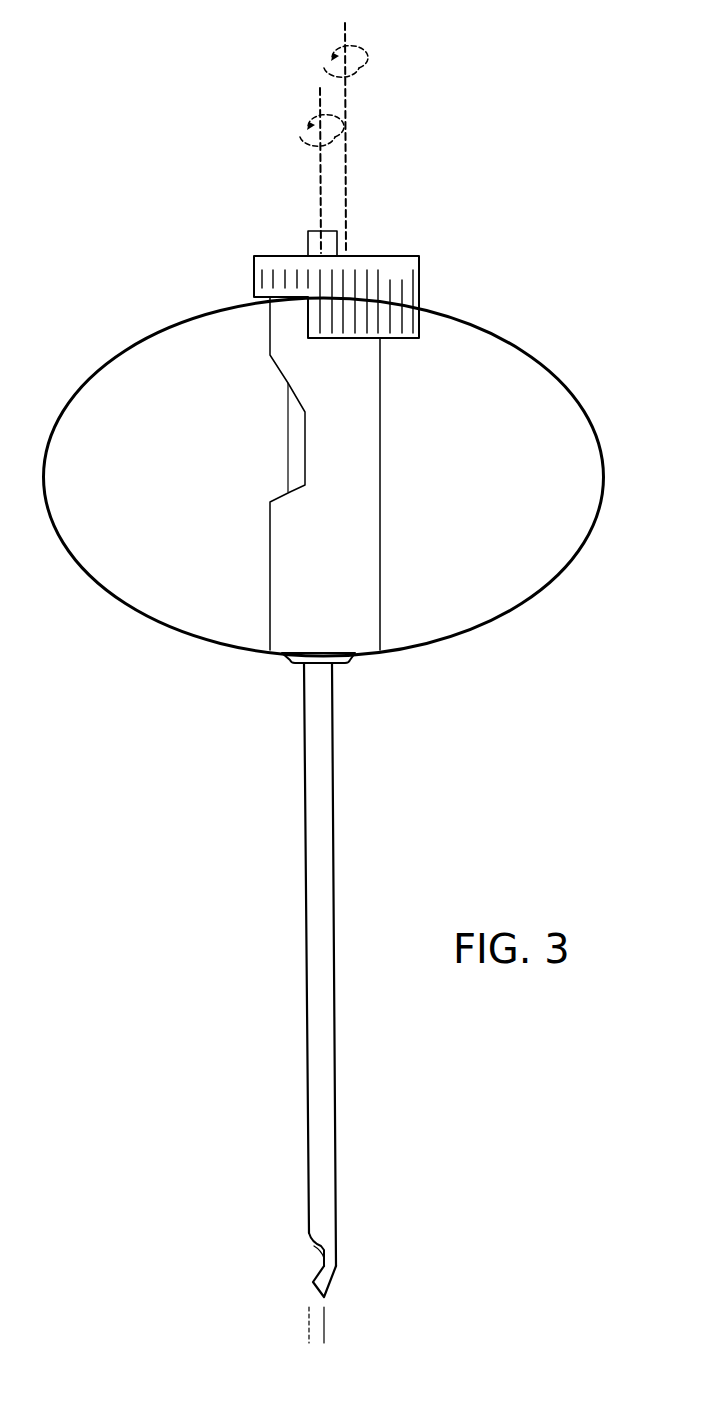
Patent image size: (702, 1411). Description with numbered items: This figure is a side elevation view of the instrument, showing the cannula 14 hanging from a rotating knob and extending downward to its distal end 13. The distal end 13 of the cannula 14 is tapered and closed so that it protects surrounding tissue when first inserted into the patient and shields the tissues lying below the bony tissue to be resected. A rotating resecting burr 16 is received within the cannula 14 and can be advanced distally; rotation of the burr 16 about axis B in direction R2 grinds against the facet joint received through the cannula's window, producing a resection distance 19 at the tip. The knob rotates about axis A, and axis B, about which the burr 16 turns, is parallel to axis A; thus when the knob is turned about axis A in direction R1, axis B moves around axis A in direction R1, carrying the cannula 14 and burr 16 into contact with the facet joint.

The distal end 13 is at (345, 1285).
The cannula 14 is at (318, 963).
The rotating resecting burr 16 is at (313, 1257).
The resection distance 19 is at (303, 1323).
The axis A is at (345, 127).
The axis B is at (310, 158).
The direction R1 is at (361, 67).
The direction R2 is at (301, 135).